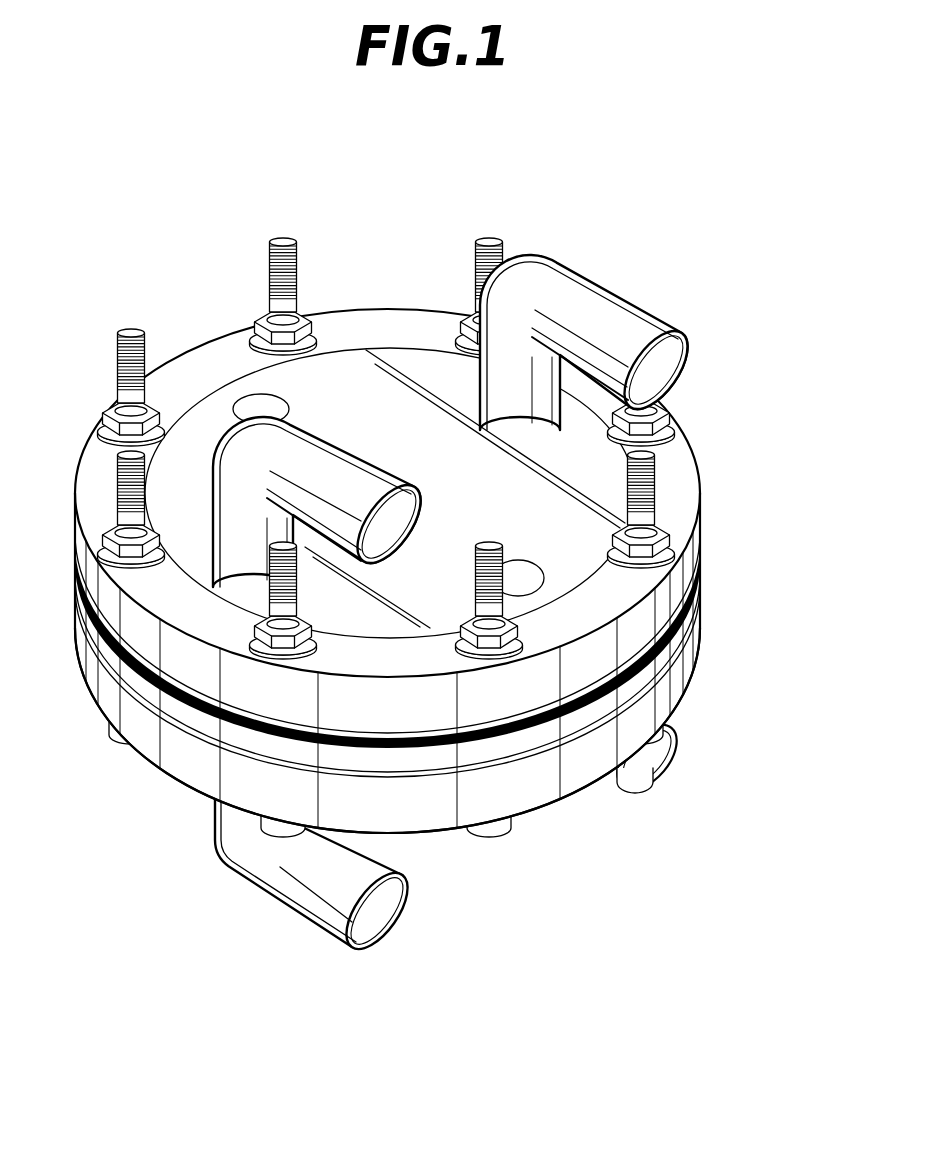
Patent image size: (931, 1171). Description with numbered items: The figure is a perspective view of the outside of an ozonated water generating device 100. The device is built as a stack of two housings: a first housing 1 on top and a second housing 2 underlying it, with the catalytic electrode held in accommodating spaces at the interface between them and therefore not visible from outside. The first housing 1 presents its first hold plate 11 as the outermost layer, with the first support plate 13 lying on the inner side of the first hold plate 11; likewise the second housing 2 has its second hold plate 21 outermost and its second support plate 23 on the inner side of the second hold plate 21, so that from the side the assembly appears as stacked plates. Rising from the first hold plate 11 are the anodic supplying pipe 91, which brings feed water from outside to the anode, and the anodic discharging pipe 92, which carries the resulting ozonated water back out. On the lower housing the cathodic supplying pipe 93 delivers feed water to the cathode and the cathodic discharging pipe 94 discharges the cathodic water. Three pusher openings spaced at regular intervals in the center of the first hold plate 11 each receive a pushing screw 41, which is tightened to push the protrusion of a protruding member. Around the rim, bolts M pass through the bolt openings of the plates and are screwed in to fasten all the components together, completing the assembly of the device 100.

The ozonated water generating device 100 is at (388, 176).
The bolts M is at (391, 412).
The pushing screw 41 is at (243, 401).
The anodic supplying pipe 91 is at (597, 303).
The anodic discharging pipe 92 is at (327, 463).
The cathodic supplying pipe 93 is at (672, 765).
The cathodic discharging pipe 94 is at (320, 905).
The first hold plate 11 is at (387, 613).
The first support plate 13 is at (710, 562).
The second support plate 23 is at (710, 600).
The second hold plate 21 is at (710, 637).
The first housing 1 is at (446, 571).
The second housing 2 is at (446, 663).